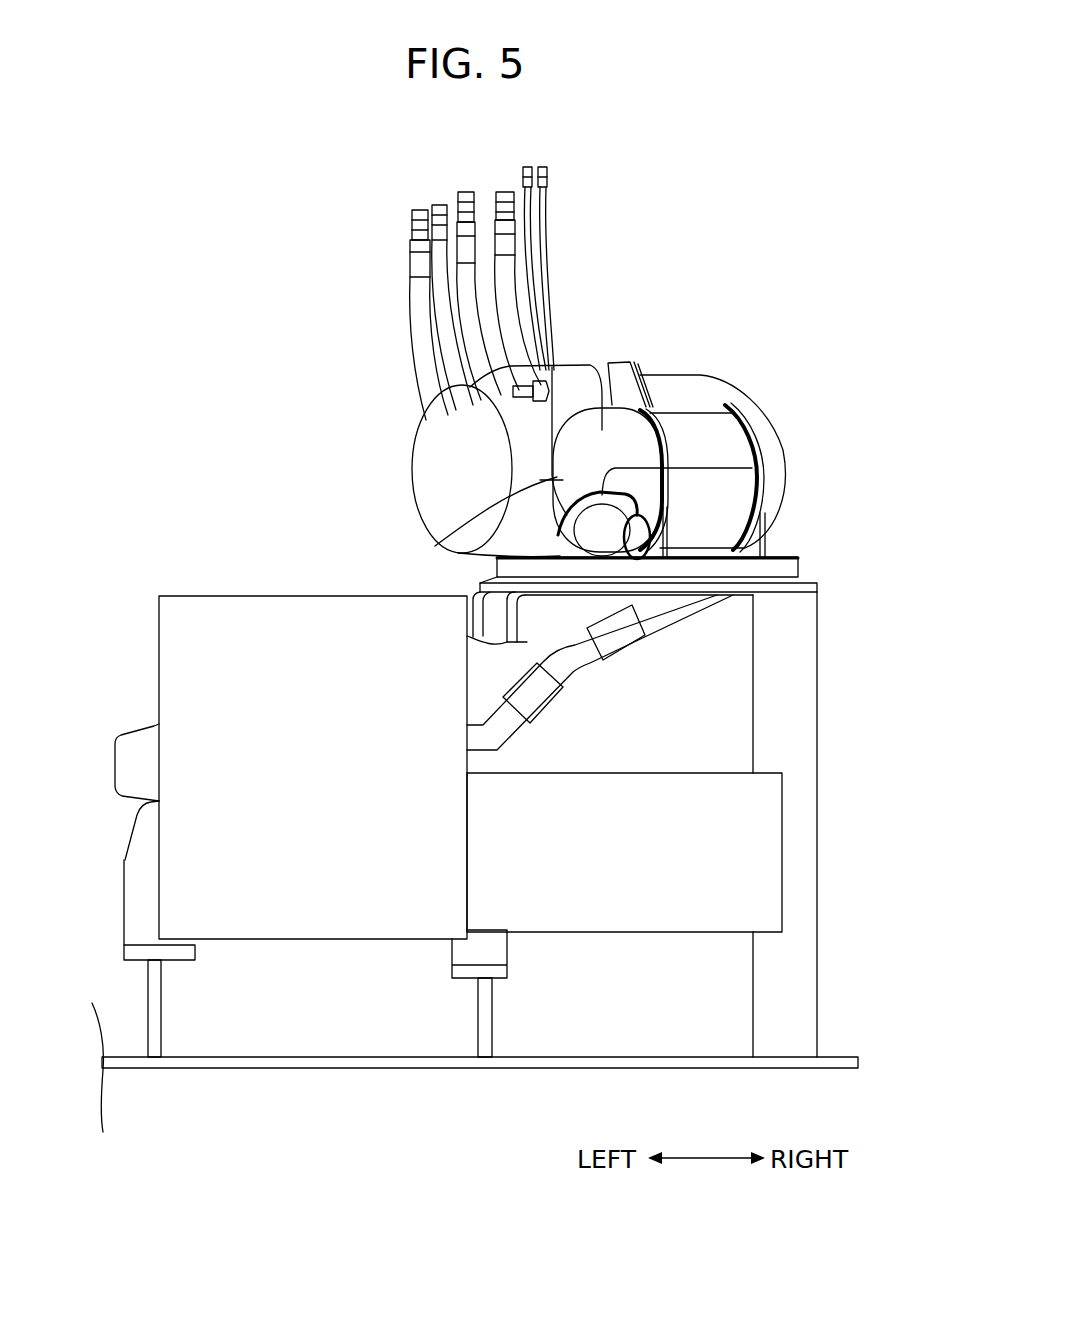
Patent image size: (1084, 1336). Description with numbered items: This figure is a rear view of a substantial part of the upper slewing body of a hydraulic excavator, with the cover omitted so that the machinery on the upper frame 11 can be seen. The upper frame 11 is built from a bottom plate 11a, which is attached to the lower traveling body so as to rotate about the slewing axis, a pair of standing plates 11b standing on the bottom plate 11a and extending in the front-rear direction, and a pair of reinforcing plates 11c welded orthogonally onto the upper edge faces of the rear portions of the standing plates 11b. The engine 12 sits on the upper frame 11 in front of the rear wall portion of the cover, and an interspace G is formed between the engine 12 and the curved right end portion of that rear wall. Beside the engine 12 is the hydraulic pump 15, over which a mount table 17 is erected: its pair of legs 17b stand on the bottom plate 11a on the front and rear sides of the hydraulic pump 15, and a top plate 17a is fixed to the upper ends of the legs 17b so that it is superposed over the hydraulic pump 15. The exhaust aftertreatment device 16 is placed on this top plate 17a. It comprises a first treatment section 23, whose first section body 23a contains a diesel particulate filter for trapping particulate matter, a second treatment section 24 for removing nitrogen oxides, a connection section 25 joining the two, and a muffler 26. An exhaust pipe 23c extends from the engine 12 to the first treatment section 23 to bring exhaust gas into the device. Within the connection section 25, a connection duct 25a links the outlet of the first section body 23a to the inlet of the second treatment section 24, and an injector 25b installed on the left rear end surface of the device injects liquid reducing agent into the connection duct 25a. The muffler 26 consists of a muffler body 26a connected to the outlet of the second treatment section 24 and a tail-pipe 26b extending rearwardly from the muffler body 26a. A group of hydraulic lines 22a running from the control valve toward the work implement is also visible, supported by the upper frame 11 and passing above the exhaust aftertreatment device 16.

The upper frame 11 is at (475, 1040).
The bottom plate 11a is at (293, 1068).
The standing plates 11b is at (158, 1057).
The reinforcing plates 11c is at (448, 1170).
The engine 12 is at (183, 596).
The hydraulic pump 15 is at (622, 935).
The exhaust aftertreatment device 16 is at (352, 426).
The mount table 17 is at (640, 791).
The top plate 17a is at (803, 593).
The legs 17b is at (487, 618).
The hydraulic lines 22a is at (576, 178).
The first treatment section 23 is at (689, 415).
The first section body 23a is at (669, 457).
The exhaust pipe 23c is at (661, 613).
The second treatment section 24 is at (720, 440).
The connection section 25 is at (433, 417).
The connection duct 25a is at (507, 461).
The injector 25b is at (537, 382).
The muffler 26 is at (576, 491).
The muffler body 26a is at (647, 534).
The tail-pipe 26b is at (750, 468).
The interspace G is at (692, 743).